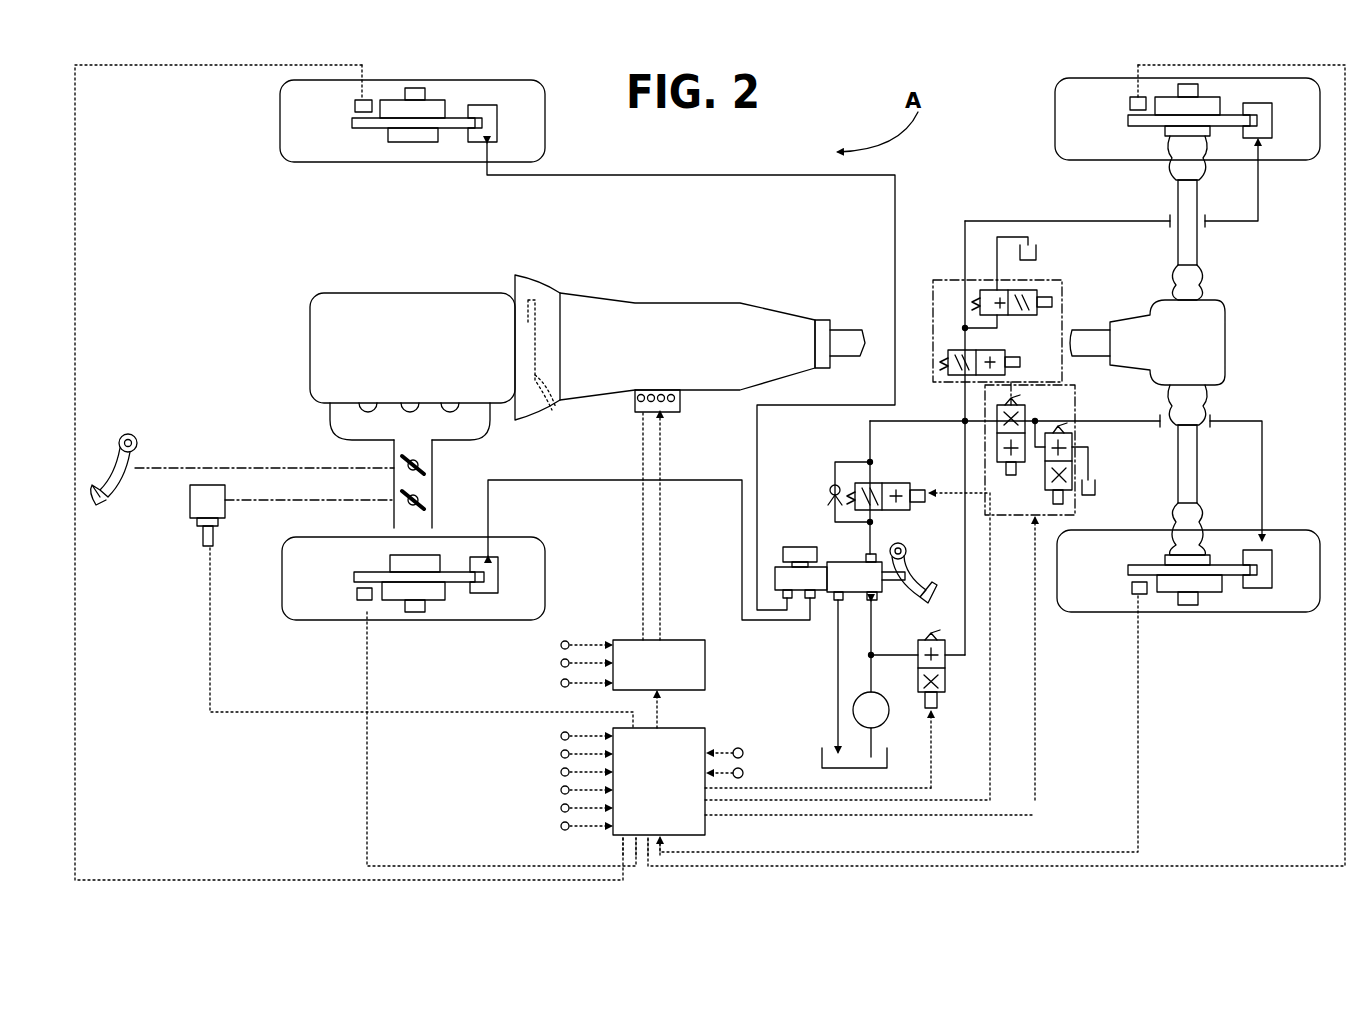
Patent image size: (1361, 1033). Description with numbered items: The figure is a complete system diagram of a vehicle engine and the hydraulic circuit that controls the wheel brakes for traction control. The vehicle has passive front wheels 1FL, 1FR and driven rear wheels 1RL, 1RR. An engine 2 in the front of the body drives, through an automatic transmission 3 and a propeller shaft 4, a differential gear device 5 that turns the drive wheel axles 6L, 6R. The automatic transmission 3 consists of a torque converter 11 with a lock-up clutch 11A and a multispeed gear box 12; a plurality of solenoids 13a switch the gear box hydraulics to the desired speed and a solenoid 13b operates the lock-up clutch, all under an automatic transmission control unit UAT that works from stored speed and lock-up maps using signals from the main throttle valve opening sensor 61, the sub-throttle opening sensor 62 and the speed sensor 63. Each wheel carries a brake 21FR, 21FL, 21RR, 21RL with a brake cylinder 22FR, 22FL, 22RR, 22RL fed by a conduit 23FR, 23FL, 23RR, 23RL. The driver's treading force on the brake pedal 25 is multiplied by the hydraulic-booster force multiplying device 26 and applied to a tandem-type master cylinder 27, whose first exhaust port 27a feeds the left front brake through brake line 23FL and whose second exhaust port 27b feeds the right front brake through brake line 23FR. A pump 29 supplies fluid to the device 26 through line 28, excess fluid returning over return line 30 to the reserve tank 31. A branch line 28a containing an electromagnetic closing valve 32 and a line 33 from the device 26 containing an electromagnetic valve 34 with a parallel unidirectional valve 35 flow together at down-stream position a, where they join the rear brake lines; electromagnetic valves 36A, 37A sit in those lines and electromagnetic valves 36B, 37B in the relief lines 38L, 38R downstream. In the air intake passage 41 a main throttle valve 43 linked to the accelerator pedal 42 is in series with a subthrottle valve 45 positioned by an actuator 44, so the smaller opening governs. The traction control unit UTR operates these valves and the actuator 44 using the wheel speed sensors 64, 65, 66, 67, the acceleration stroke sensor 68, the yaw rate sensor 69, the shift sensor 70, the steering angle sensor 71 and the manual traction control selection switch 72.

The passive wheel 1FR is at (280, 120).
The passive wheel 1FL is at (282, 584).
The drive wheel 1RR is at (1055, 118).
The drive wheel 1RL is at (1076, 612).
The engine 2 is at (382, 300).
The automatic transmission 3 is at (648, 300).
The propeller shaft 4 is at (852, 333).
The differential gear device 5 is at (1218, 345).
The drive wheel axle 6R is at (1185, 248).
The drive wheel axle 6L is at (1190, 485).
The torque converter 11 is at (552, 300).
The lock-up clutch 11A is at (556, 411).
The multispeed gear box 12 is at (708, 320).
The solenoids 13a is at (674, 400).
The solenoid 13b is at (637, 410).
The brake 21FR is at (450, 150).
The brake 21FL is at (445, 610).
The brake 21RR is at (1228, 150).
The brake 21RL is at (1215, 602).
The brake cylinder 22FR is at (492, 125).
The brake cylinder 22FL is at (500, 575).
The brake cylinder 22RR is at (1266, 122).
The brake cylinder 22RL is at (1270, 570).
The brake line 23FR is at (772, 180).
The brake line 23FL is at (580, 482).
The brake line 23RR is at (1055, 215).
The brake line 23RL is at (1265, 470).
The brake pedal 25 is at (912, 578).
The force multiplying device 26 is at (842, 572).
The tandem-type master cylinder 27 is at (790, 565).
The first exhaust port 27a is at (812, 602).
The second exhaust port 27b is at (786, 602).
The line 28 is at (874, 672).
The branch line 28a is at (962, 660).
The pump 29 is at (880, 728).
The return line 30 is at (835, 702).
The reserve tank 31 is at (1040, 255).
The electromagnetic closing valve 32 is at (915, 648).
The line 33 is at (890, 424).
The electromagnetic valve 34 is at (895, 470).
The unidirectional valve 35 is at (830, 486).
The electromagnetic valve 36A is at (1028, 415).
The electromagnetic valve 36B is at (1074, 442).
The electromagnetic valve 37A is at (1000, 350).
The electromagnetic valve 37B is at (985, 290).
The relief line 38R is at (1000, 236).
The relief line 38L is at (1090, 468).
The air intake passage 41 is at (390, 482).
The accelerator pedal 42 is at (100, 505).
The main throttle valve 43 is at (430, 468).
The actuator 44 is at (188, 510).
The subthrottle valve 45 is at (430, 502).
The main throttle valve opening sensor 61 is at (560, 643).
The sub-throttle opening sensor 62 is at (560, 662).
The speed sensor 63 is at (560, 682).
The wheel speed sensor 64 is at (354, 110).
The wheel speed sensor 65 is at (360, 600).
The wheel speed sensor 66 is at (1128, 112).
The wheel speed sensor 67 is at (1140, 596).
The acceleration stroke sensor 68 is at (560, 790).
The yaw rate sensor 69 is at (560, 810).
The shift sensor 70 is at (560, 828).
The steering angle sensor 71 is at (752, 740).
The manual operation traction control selection switch 72 is at (744, 772).
The down-stream position a is at (960, 421).
The automatic transmission control unit UAT is at (659, 684).
The control unit for traction control UTR is at (824, 791).